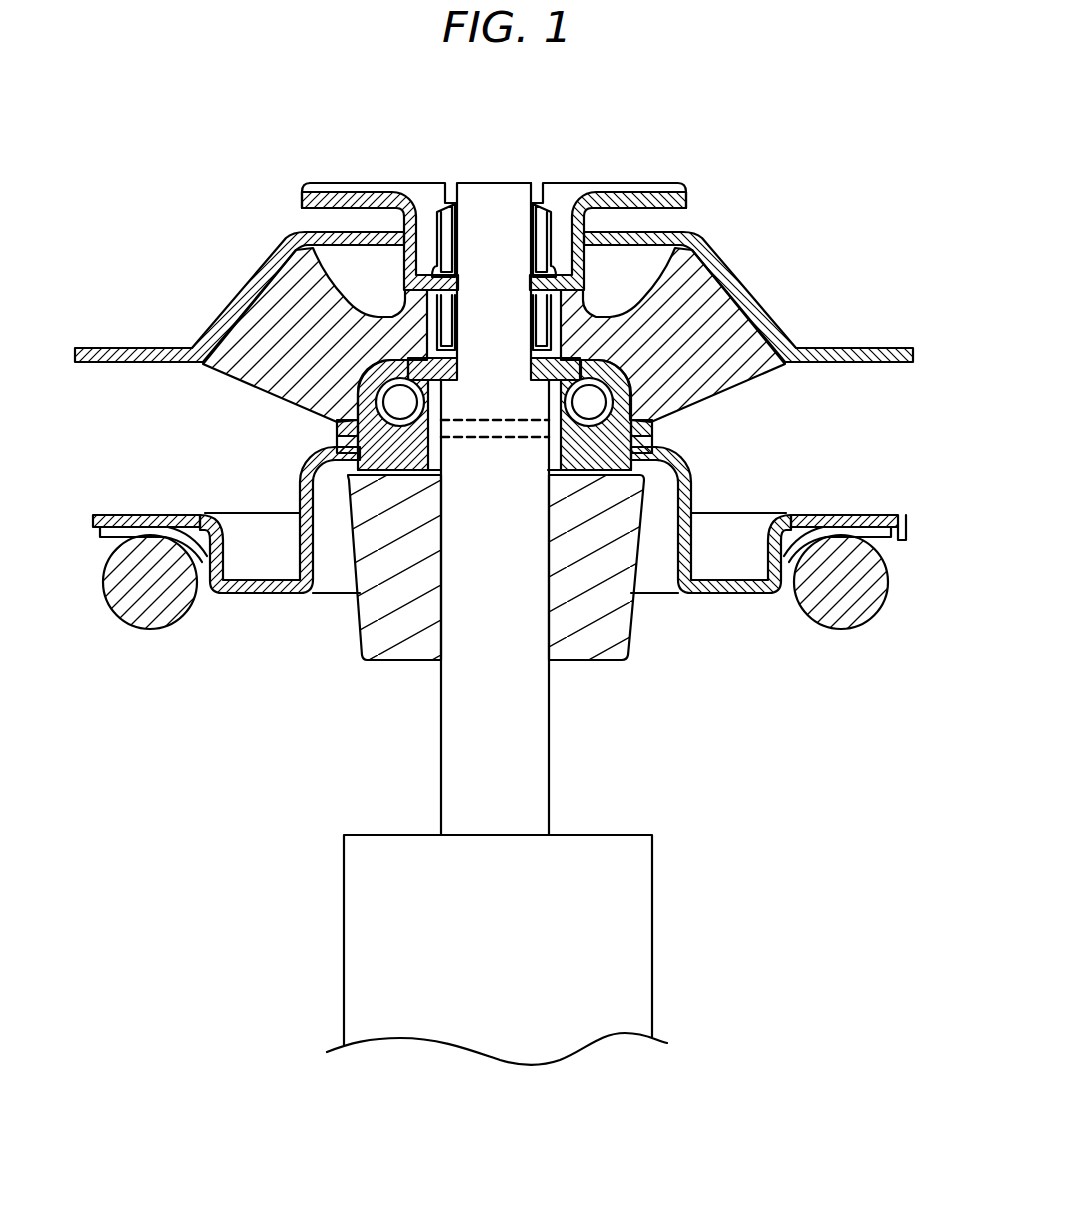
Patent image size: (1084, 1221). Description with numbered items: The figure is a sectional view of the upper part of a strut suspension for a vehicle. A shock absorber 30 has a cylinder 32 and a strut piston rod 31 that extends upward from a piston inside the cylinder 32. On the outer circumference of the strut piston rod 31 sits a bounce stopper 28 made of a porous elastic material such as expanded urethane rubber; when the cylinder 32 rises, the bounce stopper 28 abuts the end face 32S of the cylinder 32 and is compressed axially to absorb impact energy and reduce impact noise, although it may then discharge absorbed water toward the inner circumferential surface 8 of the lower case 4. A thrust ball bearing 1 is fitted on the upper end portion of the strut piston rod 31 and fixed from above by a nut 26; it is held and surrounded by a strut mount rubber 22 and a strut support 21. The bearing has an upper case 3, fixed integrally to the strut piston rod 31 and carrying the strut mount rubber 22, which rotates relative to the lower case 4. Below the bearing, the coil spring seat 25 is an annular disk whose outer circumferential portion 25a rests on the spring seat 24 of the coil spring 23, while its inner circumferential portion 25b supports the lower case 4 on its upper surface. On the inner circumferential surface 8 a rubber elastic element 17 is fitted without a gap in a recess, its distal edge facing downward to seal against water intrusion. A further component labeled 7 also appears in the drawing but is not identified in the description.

The thrust ball bearing 1 is at (421, 414).
The upper case 3 is at (345, 367).
The lower case 4 is at (337, 428).
The shaft 7 is at (443, 467).
The inner circumferential surface 8 is at (457, 453).
The rubber elastic element 17 is at (335, 479).
The strut support 21 is at (723, 268).
The strut mount rubber 22 is at (745, 375).
The coil spring 23 is at (860, 605).
The spring seat 24 is at (897, 515).
The coil spring seat 25 is at (495, 549).
The outer circumferential portion 25a is at (848, 517).
The inner circumferential portion 25b is at (624, 447).
The nut 26 is at (540, 222).
The bounce stopper 28 is at (563, 273).
The shock absorber 30 is at (556, 722).
The strut piston rod 31 is at (521, 740).
The cylinder 32 is at (640, 945).
The end face 32S is at (583, 836).